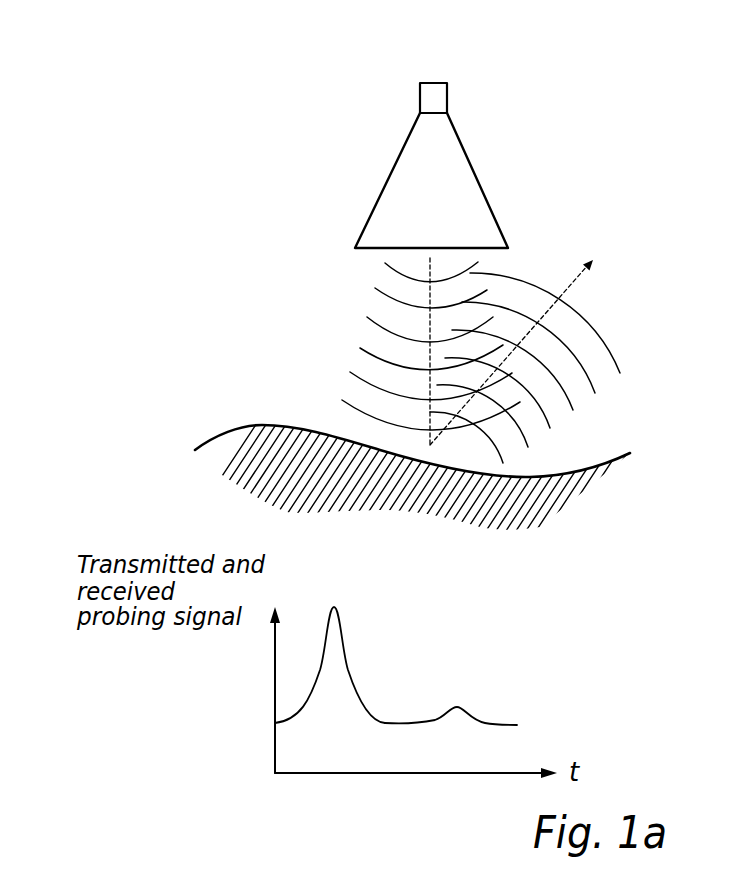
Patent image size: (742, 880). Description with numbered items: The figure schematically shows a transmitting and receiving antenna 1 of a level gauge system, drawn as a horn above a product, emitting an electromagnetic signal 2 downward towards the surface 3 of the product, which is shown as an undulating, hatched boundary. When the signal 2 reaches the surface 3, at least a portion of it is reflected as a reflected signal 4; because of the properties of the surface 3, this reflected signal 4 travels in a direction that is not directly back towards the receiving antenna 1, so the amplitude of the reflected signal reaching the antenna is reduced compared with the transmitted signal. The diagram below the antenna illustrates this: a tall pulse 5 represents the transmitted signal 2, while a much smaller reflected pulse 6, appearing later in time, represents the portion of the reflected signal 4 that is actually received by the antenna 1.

The transmitting and receiving antenna 1 is at (468, 182).
The electromagnetic signal 2 is at (363, 346).
The surface 3 is at (240, 427).
The reflected signal 4 is at (592, 318).
The pulse 5 is at (342, 638).
The reflected pulse 6 is at (460, 705).